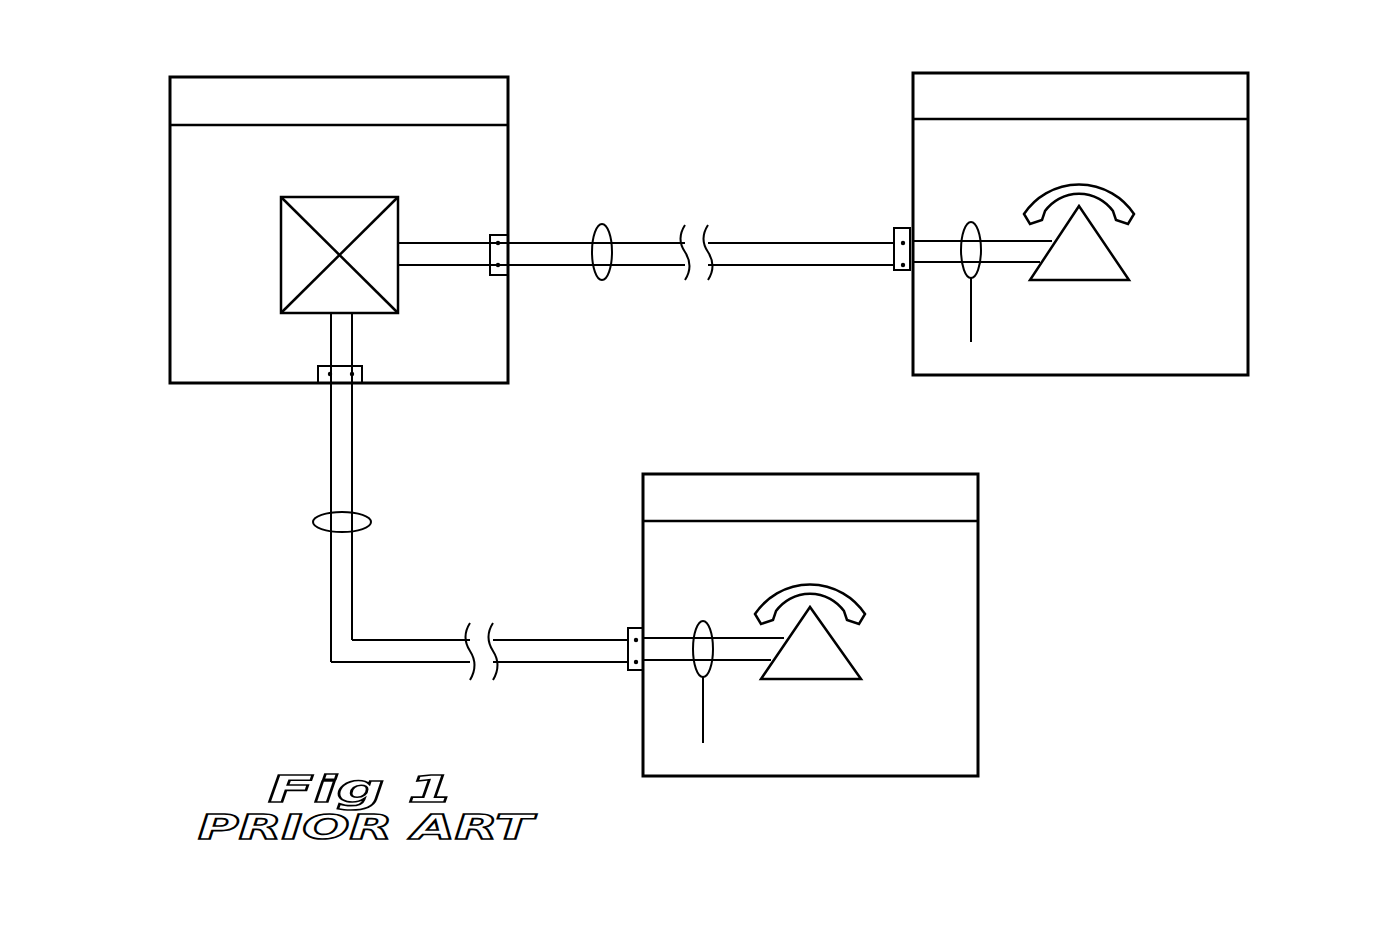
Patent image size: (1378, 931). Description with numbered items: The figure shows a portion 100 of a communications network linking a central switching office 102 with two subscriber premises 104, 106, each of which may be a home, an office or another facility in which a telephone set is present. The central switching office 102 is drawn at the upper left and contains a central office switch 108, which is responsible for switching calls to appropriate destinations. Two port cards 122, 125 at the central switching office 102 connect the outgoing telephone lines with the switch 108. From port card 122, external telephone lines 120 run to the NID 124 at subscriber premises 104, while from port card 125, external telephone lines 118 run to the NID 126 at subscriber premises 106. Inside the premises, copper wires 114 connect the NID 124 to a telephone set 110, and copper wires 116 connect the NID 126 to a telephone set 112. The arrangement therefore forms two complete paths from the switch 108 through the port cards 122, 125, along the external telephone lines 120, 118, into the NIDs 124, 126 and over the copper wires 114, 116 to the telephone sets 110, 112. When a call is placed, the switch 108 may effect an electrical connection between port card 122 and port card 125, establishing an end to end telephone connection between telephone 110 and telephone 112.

The portion of a communications network 100 is at (1154, 754).
The central switching office 102 is at (334, 76).
The subscriber premises 104 is at (1252, 86).
The subscriber premises 106 is at (982, 487).
The central office switch 108 is at (337, 254).
The telephone set 110 is at (1118, 250).
The telephone set 112 is at (850, 651).
The copper wires 114 is at (975, 327).
The copper wires 116 is at (707, 728).
The external telephone lines 118 is at (360, 515).
The external telephone lines 120 is at (609, 230).
The port card 122 is at (509, 241).
The NID 124 is at (901, 271).
The port card 125 is at (324, 385).
The NID 126 is at (634, 672).